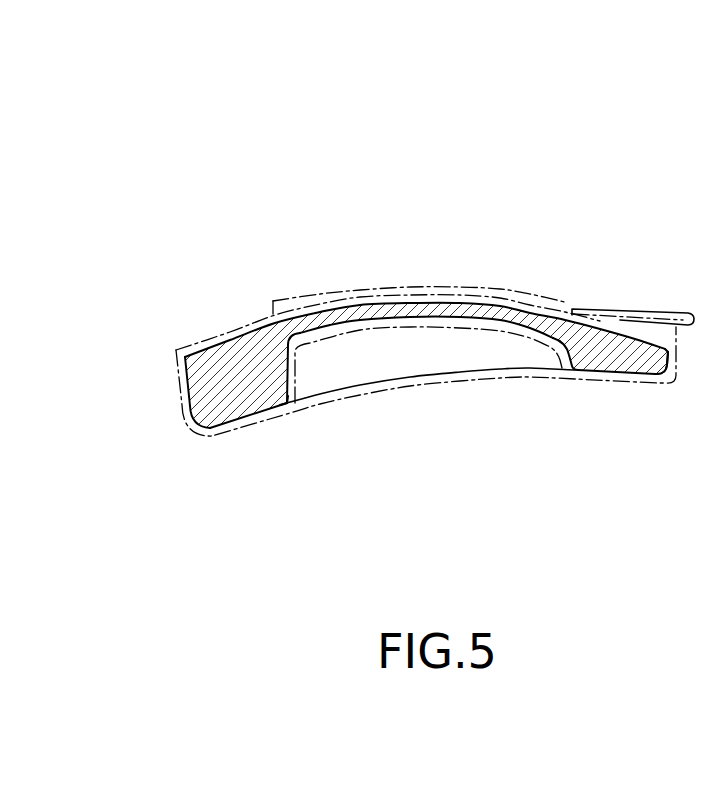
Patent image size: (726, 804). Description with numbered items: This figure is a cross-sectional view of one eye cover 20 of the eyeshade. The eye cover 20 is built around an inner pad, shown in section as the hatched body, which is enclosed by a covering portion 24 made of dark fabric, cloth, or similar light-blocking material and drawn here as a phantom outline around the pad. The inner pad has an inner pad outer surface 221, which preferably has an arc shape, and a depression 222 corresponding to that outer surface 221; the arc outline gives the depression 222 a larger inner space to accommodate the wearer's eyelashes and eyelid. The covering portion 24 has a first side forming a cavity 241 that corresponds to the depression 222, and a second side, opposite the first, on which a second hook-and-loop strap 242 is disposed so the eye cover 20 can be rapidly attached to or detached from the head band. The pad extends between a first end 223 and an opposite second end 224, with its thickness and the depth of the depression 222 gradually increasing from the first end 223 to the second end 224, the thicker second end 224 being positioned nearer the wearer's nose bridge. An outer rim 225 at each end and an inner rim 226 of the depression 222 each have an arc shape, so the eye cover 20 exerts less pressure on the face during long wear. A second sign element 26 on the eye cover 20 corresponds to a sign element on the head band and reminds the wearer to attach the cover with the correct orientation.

The eye cover 20 is at (410, 51).
The covering portion 24 is at (227, 333).
The second hook-and-loop strap 242 is at (418, 288).
The cavity 241 is at (447, 353).
The inner pad outer surface 221 is at (474, 303).
The depression 222 is at (353, 322).
The first end 223 is at (670, 370).
The second end 224 is at (178, 381).
The outer rim 225 is at (207, 424).
The inner rim 226 is at (277, 390).
The second sign element 26 is at (633, 308).